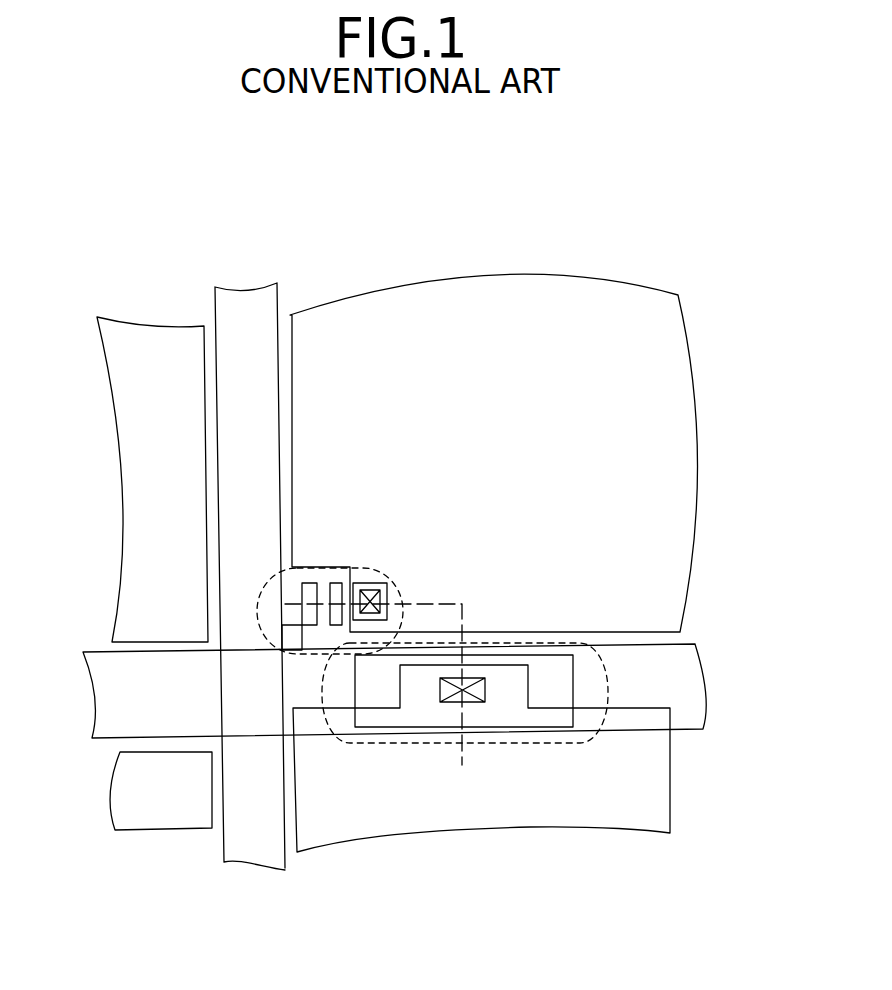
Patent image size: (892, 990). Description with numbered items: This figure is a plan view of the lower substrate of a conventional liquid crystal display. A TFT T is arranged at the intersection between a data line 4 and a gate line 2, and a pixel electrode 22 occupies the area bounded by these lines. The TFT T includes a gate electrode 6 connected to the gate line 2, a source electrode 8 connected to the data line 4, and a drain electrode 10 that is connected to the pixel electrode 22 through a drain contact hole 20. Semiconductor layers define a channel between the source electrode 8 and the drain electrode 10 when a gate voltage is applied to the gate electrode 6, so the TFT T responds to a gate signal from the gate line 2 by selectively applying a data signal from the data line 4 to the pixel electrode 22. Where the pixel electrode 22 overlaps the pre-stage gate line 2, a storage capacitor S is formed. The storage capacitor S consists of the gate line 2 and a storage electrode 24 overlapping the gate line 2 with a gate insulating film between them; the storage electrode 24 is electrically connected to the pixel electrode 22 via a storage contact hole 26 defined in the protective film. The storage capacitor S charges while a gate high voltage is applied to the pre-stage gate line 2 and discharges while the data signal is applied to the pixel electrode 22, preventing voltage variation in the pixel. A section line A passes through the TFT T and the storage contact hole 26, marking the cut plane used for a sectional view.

The gate line 2 is at (687, 688).
The data line 4 is at (253, 315).
The gate electrode 6 is at (325, 583).
The source electrode 8 is at (296, 583).
The drain electrode 10 is at (375, 583).
The drain contact hole 20 is at (387, 590).
The pixel electrode 22 is at (653, 347).
The storage electrode 24 is at (546, 648).
The storage contact hole 26 is at (478, 702).
The storage capacitor S is at (570, 742).
The TFT T is at (258, 606).
The section line A-A' A is at (374, 695).